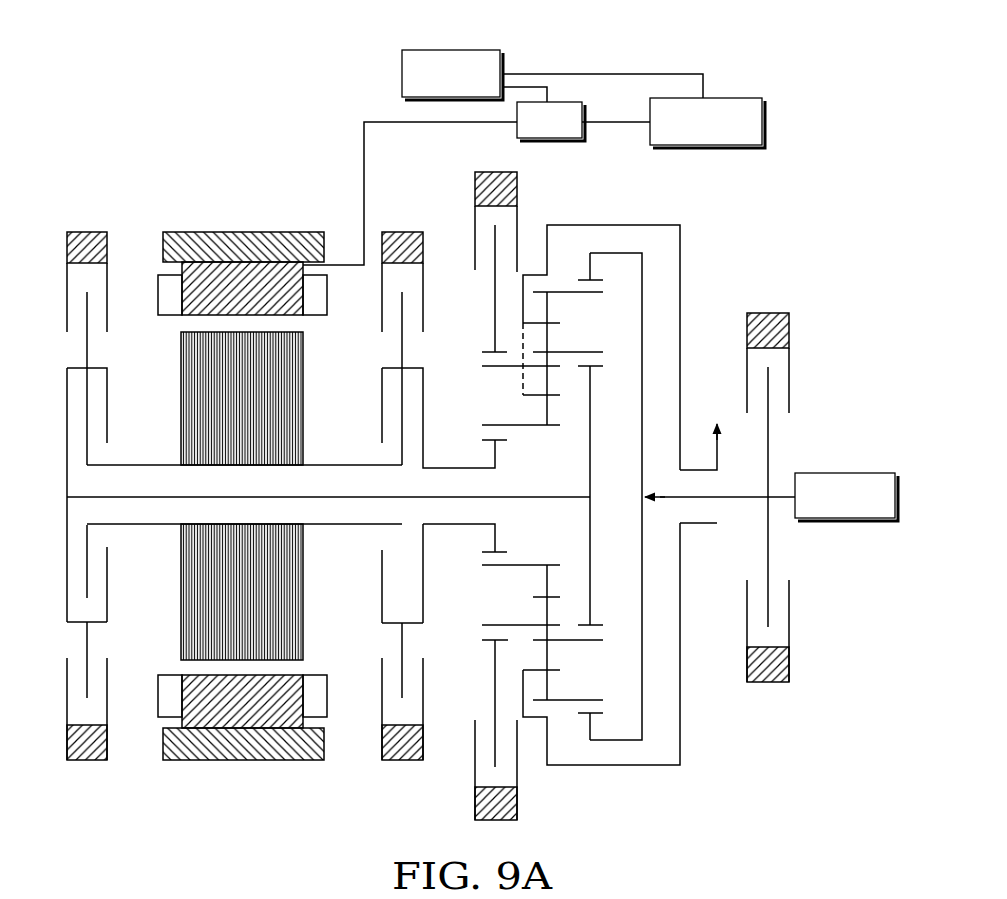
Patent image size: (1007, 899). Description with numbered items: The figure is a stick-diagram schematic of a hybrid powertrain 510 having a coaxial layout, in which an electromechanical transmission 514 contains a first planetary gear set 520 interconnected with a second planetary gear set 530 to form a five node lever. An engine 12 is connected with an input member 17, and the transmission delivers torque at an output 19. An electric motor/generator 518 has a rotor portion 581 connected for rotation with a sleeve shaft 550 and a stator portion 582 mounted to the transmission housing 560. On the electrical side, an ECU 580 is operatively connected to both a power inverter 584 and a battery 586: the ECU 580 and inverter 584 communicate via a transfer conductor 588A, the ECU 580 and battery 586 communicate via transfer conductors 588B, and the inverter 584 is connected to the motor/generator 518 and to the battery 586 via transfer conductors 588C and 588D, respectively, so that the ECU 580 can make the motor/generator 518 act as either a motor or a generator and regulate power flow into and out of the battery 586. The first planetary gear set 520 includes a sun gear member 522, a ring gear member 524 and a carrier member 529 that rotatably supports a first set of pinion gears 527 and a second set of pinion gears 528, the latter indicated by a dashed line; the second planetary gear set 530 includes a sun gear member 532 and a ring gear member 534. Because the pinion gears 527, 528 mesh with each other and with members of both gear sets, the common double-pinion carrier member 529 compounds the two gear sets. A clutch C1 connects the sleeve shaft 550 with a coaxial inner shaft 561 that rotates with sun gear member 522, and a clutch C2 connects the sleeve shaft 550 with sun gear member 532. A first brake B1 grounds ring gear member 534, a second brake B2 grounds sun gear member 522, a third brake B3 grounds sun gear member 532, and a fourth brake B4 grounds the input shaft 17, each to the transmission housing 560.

The engine 12 is at (847, 473).
The input member 17 is at (778, 499).
The transmission output member 19 is at (700, 468).
The powertrain 510 is at (799, 146).
The electromechanical transmission 514 is at (671, 207).
The electric motor/generator 518 is at (319, 375).
The first planetary gear set 520 is at (619, 731).
The sun gear member 522 is at (593, 368).
The ring gear member 524 is at (598, 262).
The first set of pinion gears 527 is at (547, 333).
The second set of pinion gears 528 is at (547, 410).
The carrier member 529 is at (552, 322).
The second planetary gear set 530 is at (534, 760).
The sun gear member 532 is at (502, 441).
The ring gear member 534 is at (491, 350).
The sleeve shaft 550 is at (167, 463).
The transmission housing 560 is at (87, 232).
The inner shaft 561 is at (212, 495).
The ECU 580 is at (452, 49).
The rotor portion 581 is at (180, 367).
The stator portion 582 is at (295, 316).
The power inverter 584 is at (582, 133).
The battery 586 is at (737, 98).
The transfer conductor 588A is at (538, 86).
The transfer conductor 588B is at (627, 73).
The transfer conductor 588C is at (467, 123).
The transfer conductor 588D is at (627, 123).
The first brake B1 is at (480, 276).
The second brake B2 is at (77, 340).
The third brake B3 is at (415, 339).
The fourth brake B4 is at (780, 419).
The first clutch C1 is at (73, 424).
The second clutch C2 is at (437, 403).